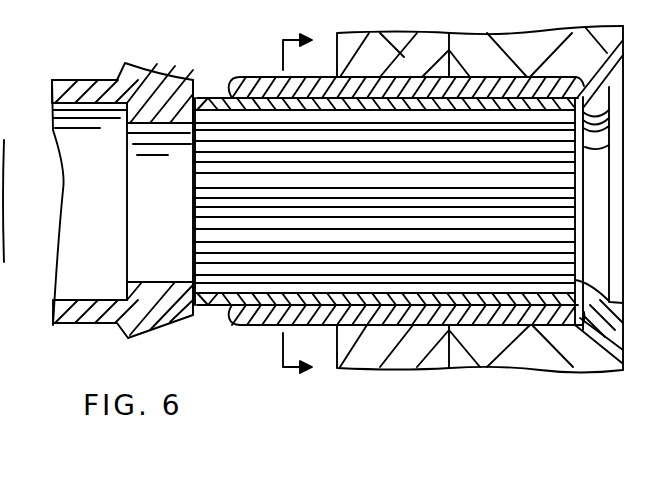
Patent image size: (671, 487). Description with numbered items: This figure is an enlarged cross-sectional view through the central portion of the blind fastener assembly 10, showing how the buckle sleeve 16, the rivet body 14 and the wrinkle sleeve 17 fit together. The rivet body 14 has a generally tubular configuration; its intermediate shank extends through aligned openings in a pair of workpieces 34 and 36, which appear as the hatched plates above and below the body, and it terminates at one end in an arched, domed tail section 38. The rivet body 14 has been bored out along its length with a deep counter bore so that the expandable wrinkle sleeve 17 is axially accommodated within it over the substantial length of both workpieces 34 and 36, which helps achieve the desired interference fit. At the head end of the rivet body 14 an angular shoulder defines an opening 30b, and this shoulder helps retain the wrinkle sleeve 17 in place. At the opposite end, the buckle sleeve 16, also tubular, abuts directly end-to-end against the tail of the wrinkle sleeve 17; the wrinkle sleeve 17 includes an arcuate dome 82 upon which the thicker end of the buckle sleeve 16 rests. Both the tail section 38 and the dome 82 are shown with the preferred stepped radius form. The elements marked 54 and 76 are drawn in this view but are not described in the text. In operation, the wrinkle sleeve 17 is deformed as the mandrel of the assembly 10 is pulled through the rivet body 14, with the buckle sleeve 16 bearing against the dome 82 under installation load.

The fastener assembly 10 is at (311, 205).
The rivet body 14 is at (458, 315).
The buckle sleeve 16 is at (68, 95).
The wrinkle sleeve 17 is at (495, 100).
The opening 30b is at (580, 308).
The workpiece 34 is at (471, 38).
The workpiece 36 is at (523, 38).
The tail section 38 is at (237, 88).
The lower sleeve 54 is at (198, 312).
The cable core 76 is at (385, 162).
The arcuate dome 82 is at (199, 98).